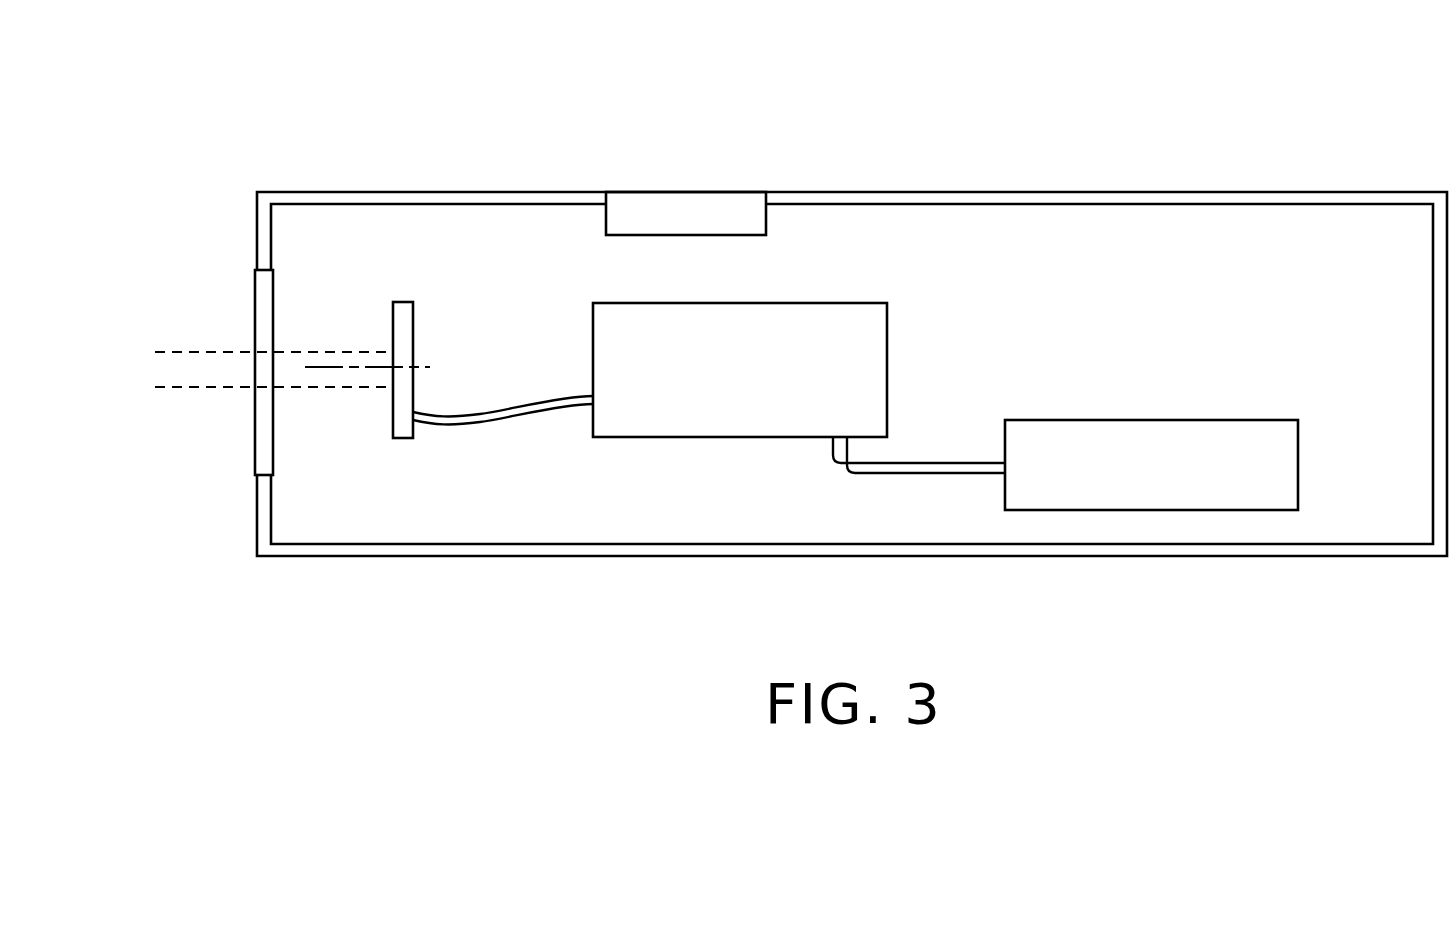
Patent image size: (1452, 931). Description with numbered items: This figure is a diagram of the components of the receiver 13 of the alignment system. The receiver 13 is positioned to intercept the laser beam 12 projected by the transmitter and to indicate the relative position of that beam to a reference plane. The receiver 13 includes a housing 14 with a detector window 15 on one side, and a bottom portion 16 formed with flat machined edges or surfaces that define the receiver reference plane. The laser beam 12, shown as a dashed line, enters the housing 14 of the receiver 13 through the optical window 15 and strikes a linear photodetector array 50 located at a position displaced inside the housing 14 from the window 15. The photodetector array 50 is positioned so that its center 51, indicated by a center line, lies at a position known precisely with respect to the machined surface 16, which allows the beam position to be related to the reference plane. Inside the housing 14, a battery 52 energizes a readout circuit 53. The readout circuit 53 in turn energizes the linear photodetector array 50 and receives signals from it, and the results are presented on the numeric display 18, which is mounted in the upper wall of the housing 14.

The laser beam 12 is at (212, 350).
The receiver 13 is at (902, 153).
The housing 14 is at (1086, 191).
The detector window 15 is at (257, 418).
The bottom portion 16 is at (456, 558).
The numeric display 18 is at (680, 200).
The linear photodetector array 50 is at (403, 302).
The center 51 is at (422, 367).
The battery 52 is at (1130, 420).
The readout circuit 53 is at (800, 302).